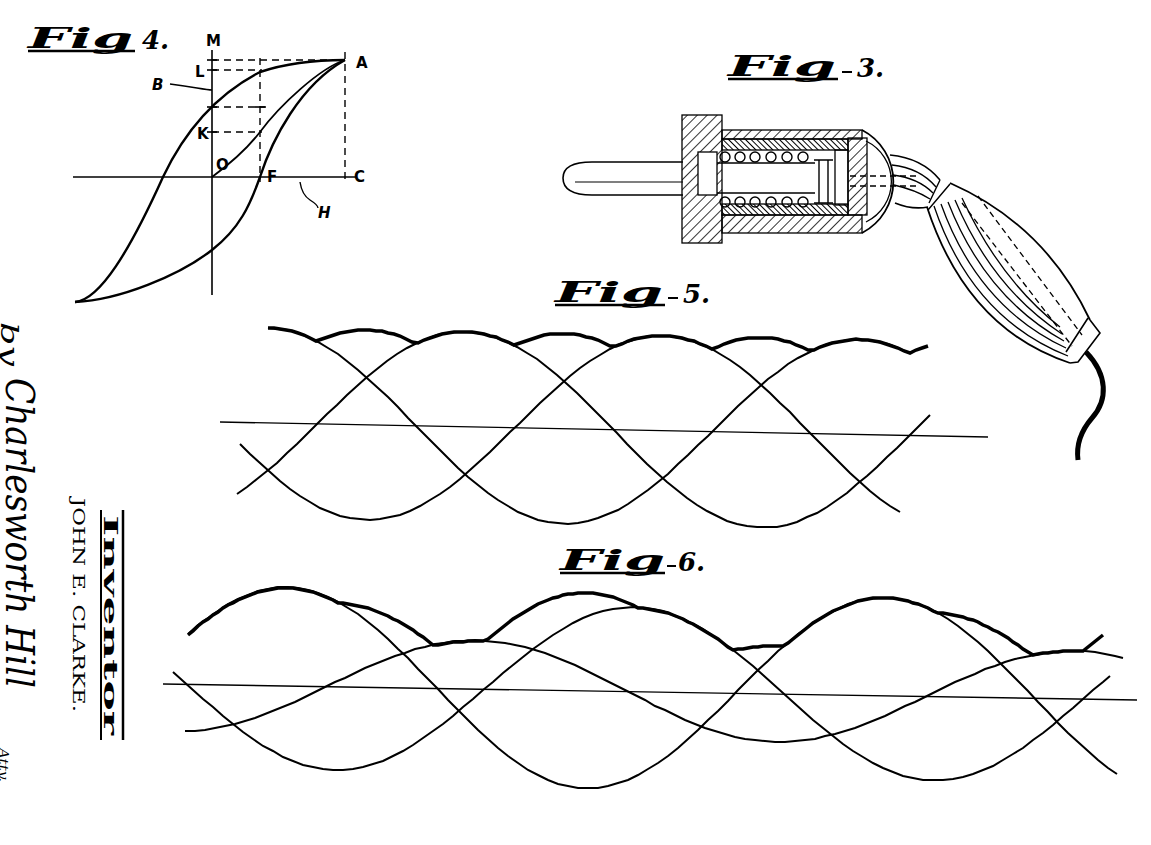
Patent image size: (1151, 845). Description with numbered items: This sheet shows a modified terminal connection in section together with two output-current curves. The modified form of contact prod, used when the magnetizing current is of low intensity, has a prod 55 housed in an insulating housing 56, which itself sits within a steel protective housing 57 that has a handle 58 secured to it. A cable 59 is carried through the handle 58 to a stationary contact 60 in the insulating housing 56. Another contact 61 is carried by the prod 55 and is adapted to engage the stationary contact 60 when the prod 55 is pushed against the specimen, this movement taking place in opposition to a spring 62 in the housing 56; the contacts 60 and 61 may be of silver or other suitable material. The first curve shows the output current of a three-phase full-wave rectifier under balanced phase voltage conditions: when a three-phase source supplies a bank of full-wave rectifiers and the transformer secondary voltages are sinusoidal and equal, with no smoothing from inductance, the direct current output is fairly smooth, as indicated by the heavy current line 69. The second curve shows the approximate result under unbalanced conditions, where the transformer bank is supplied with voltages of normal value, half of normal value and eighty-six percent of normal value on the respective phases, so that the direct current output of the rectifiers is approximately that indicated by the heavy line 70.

In FIG. 3, the prod 55 is at (594, 163).
In FIG. 3, the insulating housing 56 is at (785, 234).
In FIG. 3, the steel protective housing 57 is at (760, 130).
In FIG. 3, the handle 58 is at (931, 178).
In FIG. 3, the cable 59 is at (1077, 433).
In FIG. 3, the stationary contact 60 is at (840, 150).
In FIG. 3, the contact 61 is at (812, 158).
In FIG. 3, the spring 62 is at (737, 215).
In FIG. 5, the heavy current line 69 is at (362, 330).
In FIG. 6, the heavy line 70 is at (317, 592).